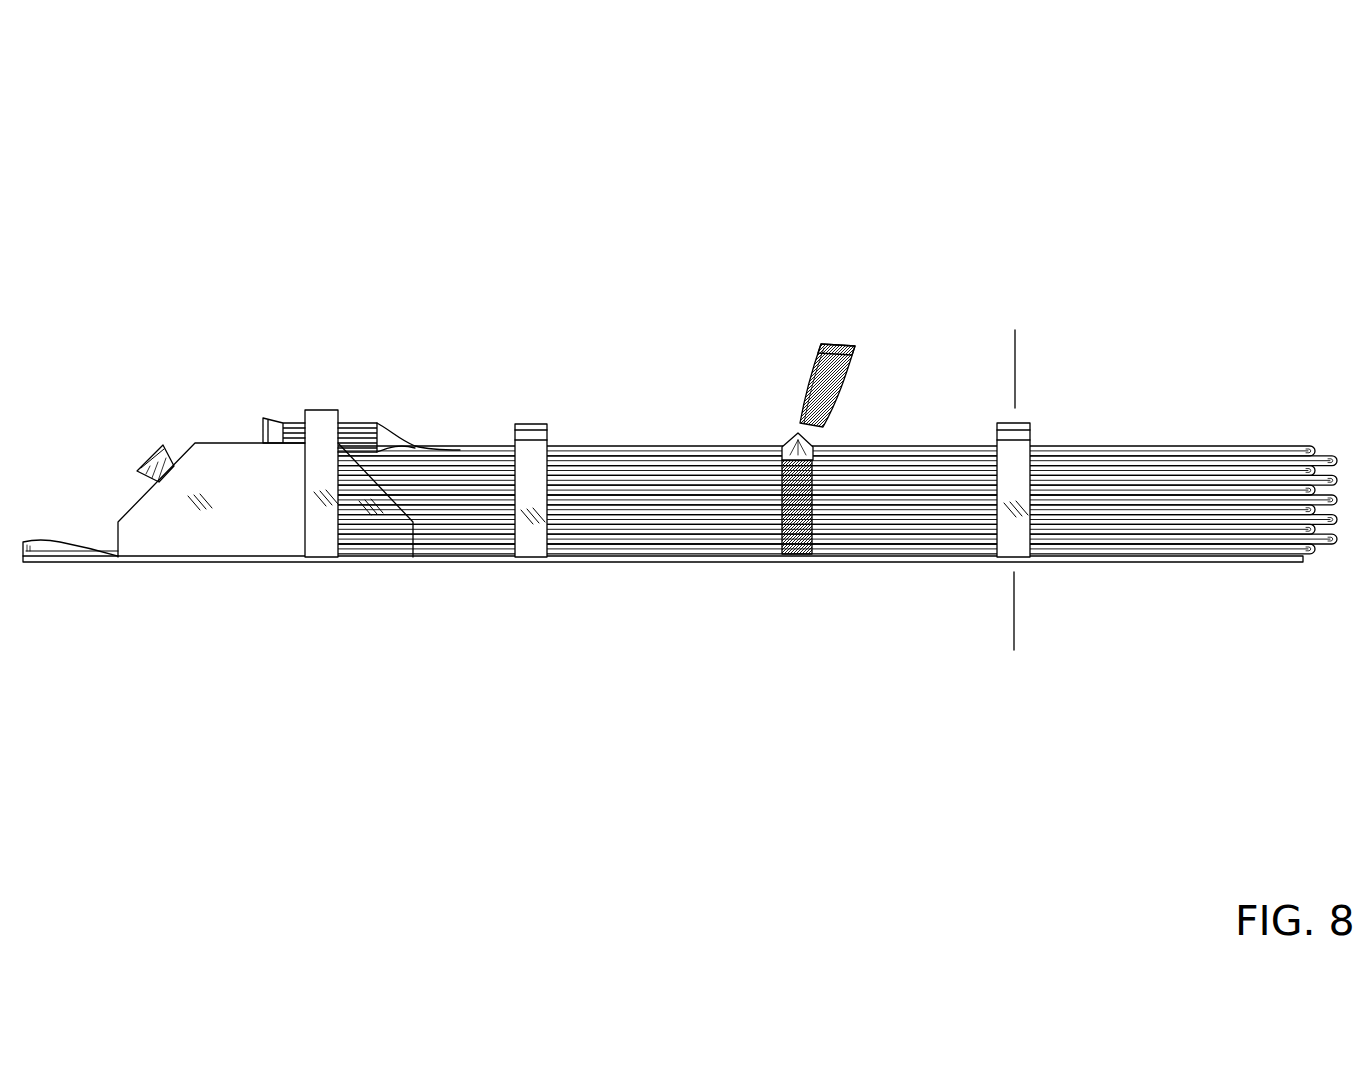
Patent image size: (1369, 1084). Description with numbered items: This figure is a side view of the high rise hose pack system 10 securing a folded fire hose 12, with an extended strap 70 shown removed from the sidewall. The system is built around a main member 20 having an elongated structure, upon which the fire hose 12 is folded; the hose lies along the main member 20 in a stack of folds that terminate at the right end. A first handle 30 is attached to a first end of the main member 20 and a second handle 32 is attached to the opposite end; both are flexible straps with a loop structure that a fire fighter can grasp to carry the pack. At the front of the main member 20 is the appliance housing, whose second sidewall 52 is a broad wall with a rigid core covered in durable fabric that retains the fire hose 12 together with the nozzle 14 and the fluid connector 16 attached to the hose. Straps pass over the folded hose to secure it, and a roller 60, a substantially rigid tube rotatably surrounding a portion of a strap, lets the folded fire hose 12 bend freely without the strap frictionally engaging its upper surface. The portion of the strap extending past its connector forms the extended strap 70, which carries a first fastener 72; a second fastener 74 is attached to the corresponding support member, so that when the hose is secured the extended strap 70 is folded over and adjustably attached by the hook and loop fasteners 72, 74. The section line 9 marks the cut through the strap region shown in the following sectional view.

The high rise hose pack system 10 is at (322, 205).
The fire hose 12 is at (1162, 447).
The nozzle 14 is at (262, 423).
The fluid connector 16 is at (160, 450).
The main member 20 is at (272, 568).
The first handle 30 is at (1303, 556).
The second handle 32 is at (43, 545).
The second sidewall 52 is at (155, 547).
The roller 60 is at (782, 433).
The extended strap 70 is at (817, 357).
The first fastener 72 is at (857, 352).
The second fastener 74 is at (787, 537).
The section line 9- 9 is at (1000, 611).